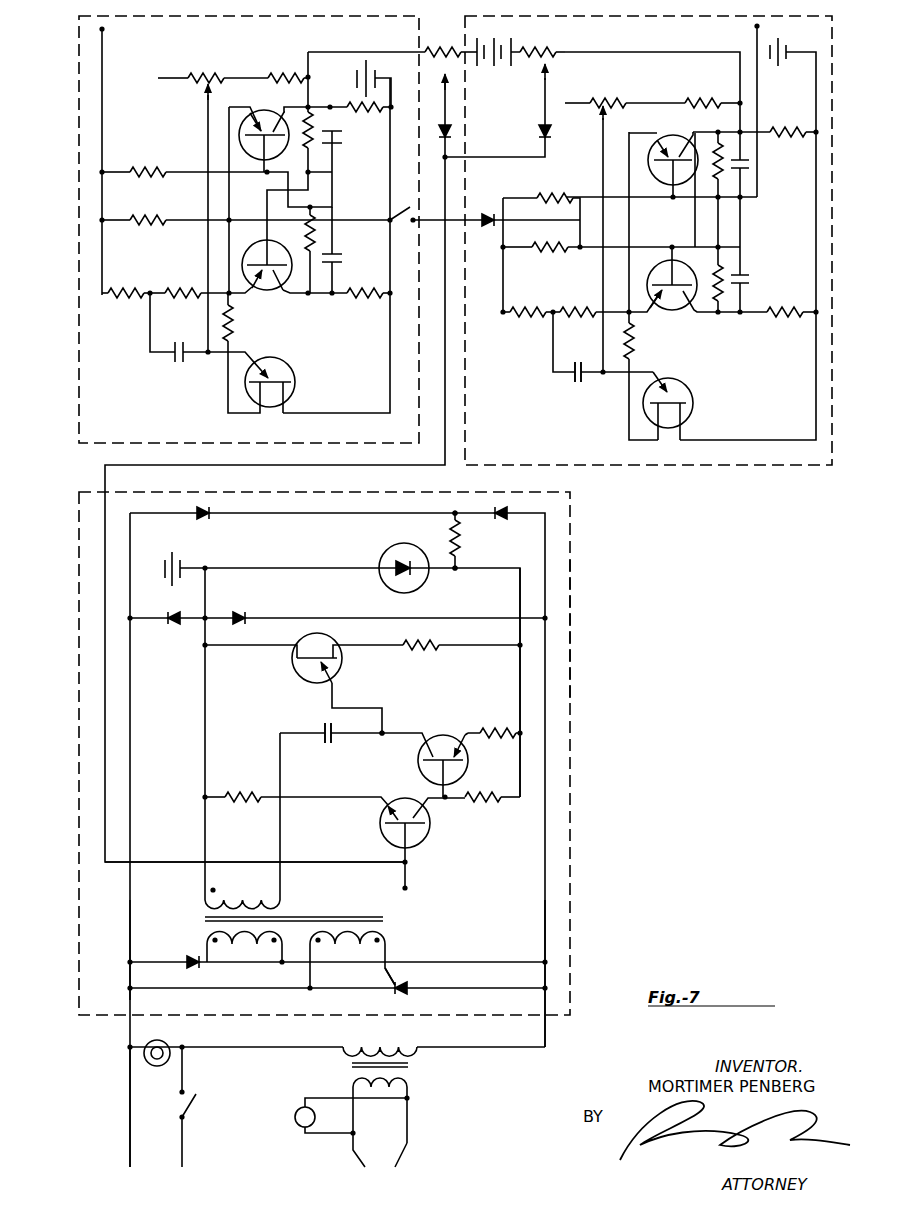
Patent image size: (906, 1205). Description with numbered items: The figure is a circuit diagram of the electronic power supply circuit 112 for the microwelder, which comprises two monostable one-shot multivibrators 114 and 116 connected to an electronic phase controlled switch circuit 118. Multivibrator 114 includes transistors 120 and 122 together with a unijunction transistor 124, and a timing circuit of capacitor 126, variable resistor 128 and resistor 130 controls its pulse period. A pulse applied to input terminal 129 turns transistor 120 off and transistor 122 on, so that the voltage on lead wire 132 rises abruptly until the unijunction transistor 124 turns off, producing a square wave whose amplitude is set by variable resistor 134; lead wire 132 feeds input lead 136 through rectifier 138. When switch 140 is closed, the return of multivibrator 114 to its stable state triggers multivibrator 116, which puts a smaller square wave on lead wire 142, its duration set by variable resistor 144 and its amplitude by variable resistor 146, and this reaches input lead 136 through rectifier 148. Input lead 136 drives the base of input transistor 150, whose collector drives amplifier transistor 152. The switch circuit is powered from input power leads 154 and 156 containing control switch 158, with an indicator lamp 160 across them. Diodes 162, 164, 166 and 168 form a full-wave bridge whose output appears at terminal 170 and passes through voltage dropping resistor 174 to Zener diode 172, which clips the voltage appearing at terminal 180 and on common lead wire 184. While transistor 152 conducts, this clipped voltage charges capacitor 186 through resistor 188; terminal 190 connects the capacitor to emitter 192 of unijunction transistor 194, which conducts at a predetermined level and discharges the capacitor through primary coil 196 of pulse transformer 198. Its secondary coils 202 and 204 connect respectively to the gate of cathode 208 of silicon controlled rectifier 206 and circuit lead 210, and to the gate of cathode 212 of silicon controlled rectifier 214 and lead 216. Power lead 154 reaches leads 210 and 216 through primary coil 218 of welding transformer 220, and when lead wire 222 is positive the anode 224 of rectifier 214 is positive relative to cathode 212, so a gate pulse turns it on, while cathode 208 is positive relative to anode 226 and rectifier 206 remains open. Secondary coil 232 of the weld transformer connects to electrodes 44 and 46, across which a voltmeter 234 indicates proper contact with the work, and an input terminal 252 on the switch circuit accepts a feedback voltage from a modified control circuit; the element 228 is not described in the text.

The electrode 44 is at (412, 1166).
The electrode 46 is at (328, 1160).
The electronic power supply circuit 112 is at (572, 494).
The monostable one-shot multivibrator 114 is at (777, 468).
The monostable one-shot multivibrator 116 is at (98, 448).
The electronic phase controlled switch circuit 118 is at (571, 676).
The transistor 120 is at (665, 312).
The transistor 122 is at (662, 184).
The unijunction transistor 124 is at (687, 392).
The capacitor 126 is at (572, 378).
The variable resistor 128 is at (598, 103).
The input terminal 129 is at (757, 27).
The resistor 130 is at (692, 103).
The lead wire 132 is at (632, 52).
The variable resistor 134 is at (546, 50).
The input lead 136 is at (445, 458).
The rectifier 138 is at (547, 138).
The switch 140 is at (408, 210).
The lead wire 142 is at (316, 52).
The variable resistor 144 is at (195, 78).
The variable resistor 146 is at (455, 38).
The rectifier 148 is at (441, 140).
The input transistor 150 is at (430, 822).
The amplifier transistor 152 is at (418, 760).
The input power lead 154 is at (182, 1080).
The input power lead 156 is at (130, 1080).
The control switch 158 is at (189, 1106).
The indicator lamp 160 is at (155, 1040).
The diode 162 is at (503, 508).
The diode 164 is at (206, 512).
The diode 166 is at (174, 626).
The diode 168 is at (239, 614).
The terminal 170 is at (452, 511).
The Zener diode 172 is at (384, 560).
The voltage dropping resistor 174 is at (473, 540).
The terminal 180 is at (458, 568).
The common lead wire 184 is at (520, 669).
The capacitor 186 is at (326, 724).
The resistor 188 is at (478, 731).
The terminal 190 is at (383, 731).
The emitter 192 is at (302, 680).
The unijunction transistor 194 is at (303, 641).
The primary coil 196 is at (232, 890).
The pulse transformer 198 is at (200, 914).
The secondary coil 202 is at (228, 942).
The secondary coil 204 is at (328, 942).
The silicon controlled rectifier 206 is at (186, 958).
The cathode 208 is at (200, 967).
The circuit lead 210 is at (252, 968).
The cathode 212 is at (390, 986).
The silicon controlled rectifier 214 is at (393, 988).
The lead 216 is at (322, 990).
The primary coil 218 is at (350, 1060).
The welding transformer 220 is at (416, 1066).
The lead wire 222 is at (545, 918).
The anode 224 is at (408, 990).
The anode 226 is at (184, 966).
The conductor 228 is at (130, 920).
The secondary coil 232 is at (410, 1094).
The voltmeter 234 is at (296, 1113).
The input terminal 252 is at (408, 888).